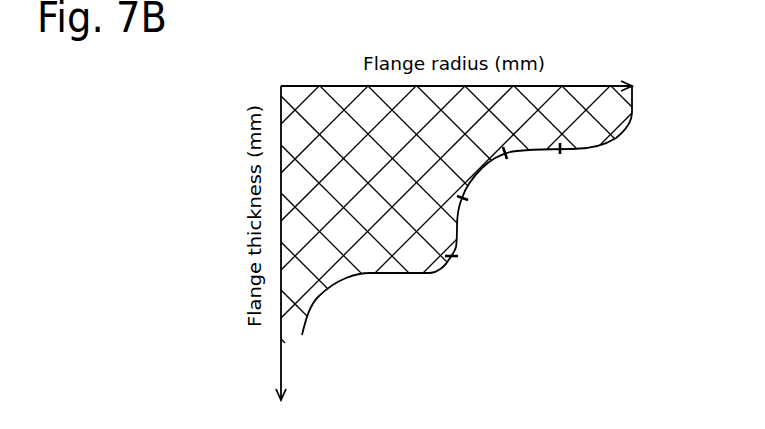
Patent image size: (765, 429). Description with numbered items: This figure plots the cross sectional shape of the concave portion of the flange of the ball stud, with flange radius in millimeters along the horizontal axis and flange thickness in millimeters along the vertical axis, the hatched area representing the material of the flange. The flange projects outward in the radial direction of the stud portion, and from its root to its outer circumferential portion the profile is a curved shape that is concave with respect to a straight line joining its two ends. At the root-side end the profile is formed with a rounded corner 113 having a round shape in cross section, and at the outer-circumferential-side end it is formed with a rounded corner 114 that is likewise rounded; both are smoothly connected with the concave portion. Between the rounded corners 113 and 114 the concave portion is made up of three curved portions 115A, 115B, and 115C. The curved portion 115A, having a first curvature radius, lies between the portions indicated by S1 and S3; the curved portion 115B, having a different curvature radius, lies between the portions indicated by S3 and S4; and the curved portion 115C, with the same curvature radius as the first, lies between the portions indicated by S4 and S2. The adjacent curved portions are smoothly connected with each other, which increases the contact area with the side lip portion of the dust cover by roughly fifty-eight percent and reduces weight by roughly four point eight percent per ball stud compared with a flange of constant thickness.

The rounded corner 113 is at (440, 274).
The rounded corner 114 is at (620, 138).
The curved portion 115A is at (460, 227).
The curved portion 115B is at (482, 168).
The curved portion 115C is at (521, 152).
The portion S1 is at (467, 260).
The portion S2 is at (558, 164).
The portion S3 is at (478, 208).
The portion S4 is at (513, 167).